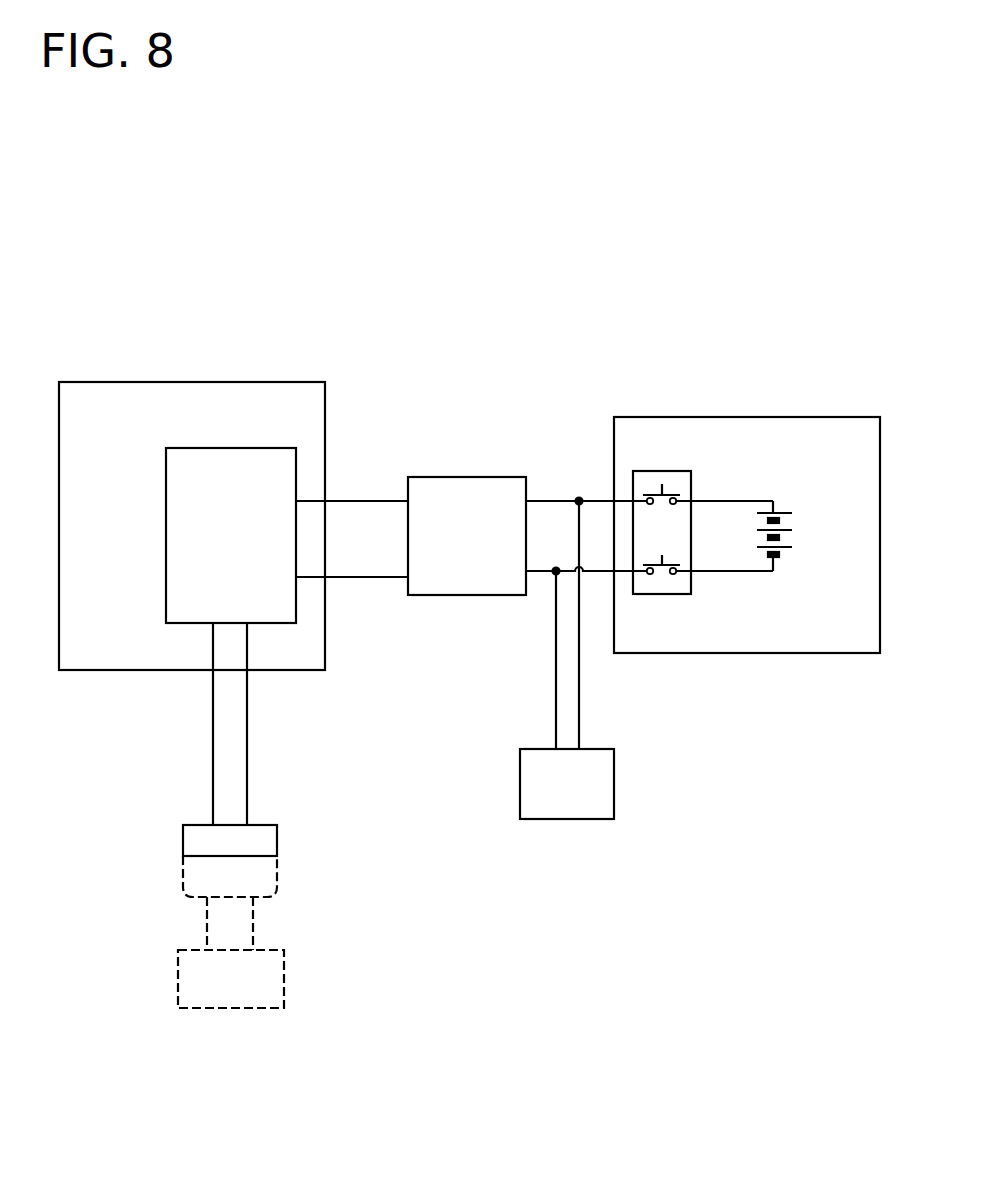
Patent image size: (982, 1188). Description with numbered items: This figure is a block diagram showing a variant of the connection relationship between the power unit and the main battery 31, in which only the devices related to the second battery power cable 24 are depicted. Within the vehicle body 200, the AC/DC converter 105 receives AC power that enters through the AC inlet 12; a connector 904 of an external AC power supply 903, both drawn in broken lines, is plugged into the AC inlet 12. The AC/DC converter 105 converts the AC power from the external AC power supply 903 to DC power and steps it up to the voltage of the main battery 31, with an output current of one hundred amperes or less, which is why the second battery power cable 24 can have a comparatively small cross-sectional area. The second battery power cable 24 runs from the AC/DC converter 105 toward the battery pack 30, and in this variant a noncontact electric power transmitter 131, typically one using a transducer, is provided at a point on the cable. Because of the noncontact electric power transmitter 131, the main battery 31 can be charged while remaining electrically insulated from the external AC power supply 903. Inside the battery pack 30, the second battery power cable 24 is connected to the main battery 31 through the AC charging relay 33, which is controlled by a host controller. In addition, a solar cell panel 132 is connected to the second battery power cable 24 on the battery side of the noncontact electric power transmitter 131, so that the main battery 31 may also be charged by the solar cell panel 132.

The body 200 is at (128, 381).
The AC/DC converter 105 is at (230, 447).
The second battery power cable 24 is at (356, 588).
The noncontact electric power transmitter 131 is at (455, 476).
The battery pack 30 is at (740, 416).
The AC charging relay 33 is at (658, 470).
The main battery 31 is at (788, 513).
The solar cell panel 132 is at (518, 765).
The AC inlet 12 is at (182, 840).
The connector 904 is at (277, 876).
The AC power supply 903 is at (284, 972).